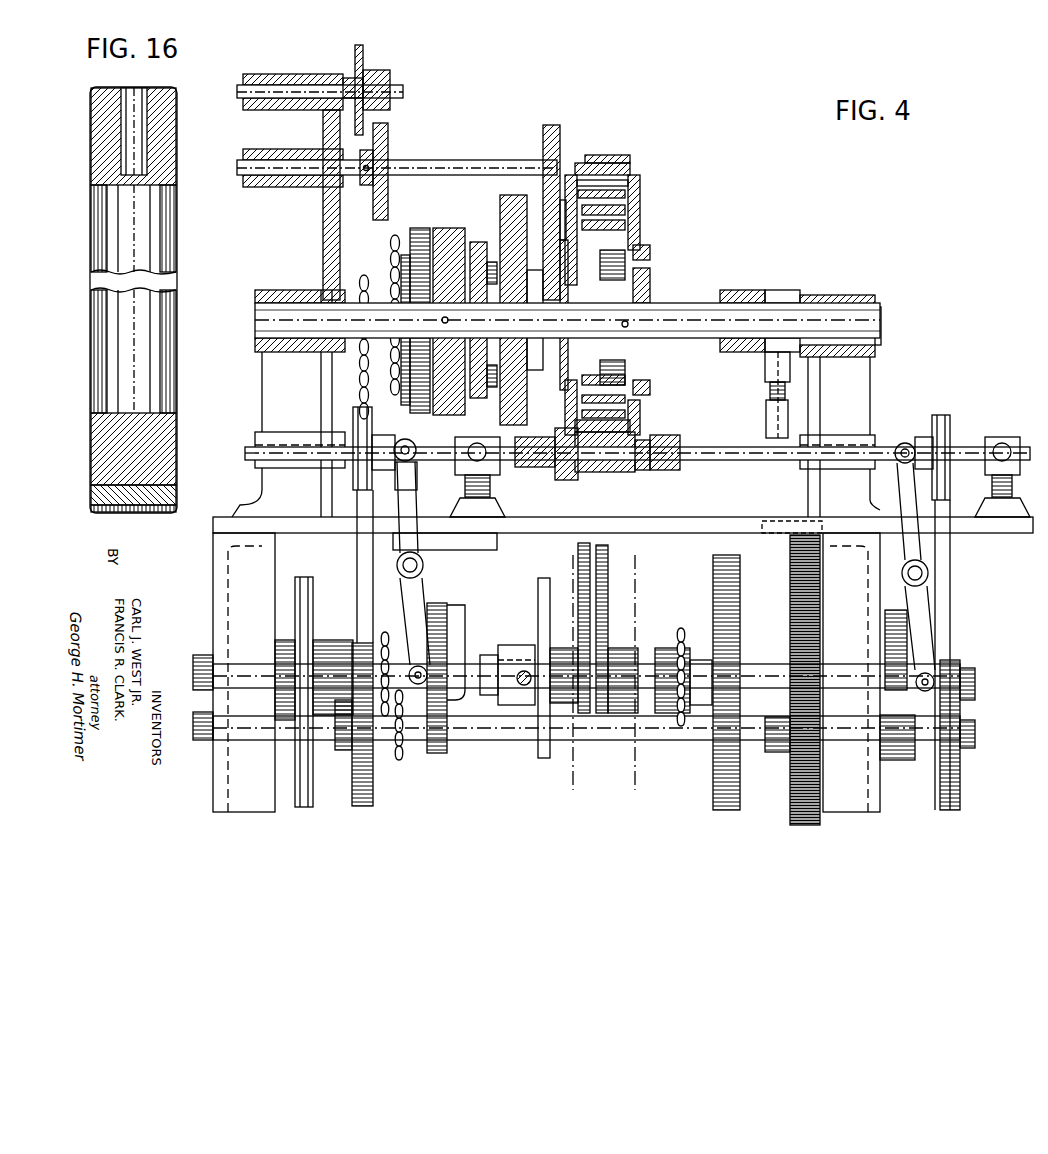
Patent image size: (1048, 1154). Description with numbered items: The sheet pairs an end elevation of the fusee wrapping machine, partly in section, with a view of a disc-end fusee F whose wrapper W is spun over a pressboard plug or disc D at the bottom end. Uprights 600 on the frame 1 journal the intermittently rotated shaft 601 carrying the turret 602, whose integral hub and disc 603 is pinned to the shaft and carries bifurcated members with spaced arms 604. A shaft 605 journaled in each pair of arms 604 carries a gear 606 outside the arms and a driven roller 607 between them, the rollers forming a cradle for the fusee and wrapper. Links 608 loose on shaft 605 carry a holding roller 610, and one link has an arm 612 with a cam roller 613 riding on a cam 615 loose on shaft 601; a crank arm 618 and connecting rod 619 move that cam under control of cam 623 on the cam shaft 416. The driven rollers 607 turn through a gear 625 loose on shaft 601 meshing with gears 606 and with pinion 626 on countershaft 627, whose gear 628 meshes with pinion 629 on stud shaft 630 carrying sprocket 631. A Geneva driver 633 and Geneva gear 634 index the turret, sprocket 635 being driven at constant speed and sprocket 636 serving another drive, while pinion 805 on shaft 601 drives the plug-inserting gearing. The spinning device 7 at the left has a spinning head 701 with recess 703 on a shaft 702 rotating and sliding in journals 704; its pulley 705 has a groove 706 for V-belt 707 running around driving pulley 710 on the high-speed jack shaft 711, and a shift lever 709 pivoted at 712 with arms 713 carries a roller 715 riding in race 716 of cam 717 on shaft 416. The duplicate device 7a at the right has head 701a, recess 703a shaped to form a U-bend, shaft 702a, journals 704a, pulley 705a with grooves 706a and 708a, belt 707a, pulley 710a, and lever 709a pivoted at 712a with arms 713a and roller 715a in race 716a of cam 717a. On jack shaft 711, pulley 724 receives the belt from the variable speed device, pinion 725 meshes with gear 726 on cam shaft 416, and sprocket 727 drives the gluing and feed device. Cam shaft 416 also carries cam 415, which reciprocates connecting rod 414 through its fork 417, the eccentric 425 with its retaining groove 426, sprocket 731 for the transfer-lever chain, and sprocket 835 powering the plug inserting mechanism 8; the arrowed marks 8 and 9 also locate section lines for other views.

In FIG. 16, the filled end portion F is at (98, 158).
In FIG. 16, the cylindrical wall W is at (90, 248).
In FIG. 16, the plug or disc D is at (105, 497).
In FIG. 4, the frame 1 is at (213, 590).
In FIG. 4, the spinning device 7 is at (431, 444).
In FIG. 4, the spinning device 7a is at (971, 441).
In FIG. 4, the plug inserting mechanism 8 is at (556, 562).
In FIG. 4, the section line 9 is at (640, 558).
In FIG. 4, the connecting rod 414 is at (522, 690).
In FIG. 4, the cam 415 is at (540, 592).
In FIG. 4, the cam shaft 416 is at (193, 672).
In FIG. 4, the fork 417 is at (518, 648).
In FIG. 4, the eccentric 425 is at (606, 562).
In FIG. 4, the groove 426 is at (589, 619).
In FIG. 4, the uprights 600 is at (268, 398).
In FIG. 4, the shaft 601 is at (230, 300).
In FIG. 4, the turret 602 is at (616, 308).
In FIG. 4, the hub and disc 603 is at (612, 317).
In FIG. 4, the arms 604 is at (630, 226).
In FIG. 4, the shaft 605 is at (630, 212).
In FIG. 4, the gear 606 is at (562, 220).
In FIG. 4, the driven roller 607 is at (626, 194).
In FIG. 4, the links 608 is at (566, 200).
In FIG. 4, the holding roller 610 is at (610, 160).
In FIG. 4, the arm 612 is at (640, 405).
In FIG. 4, the cam roller 613 is at (651, 254).
In FIG. 4, the cam 615 is at (651, 290).
In FIG. 4, the crank arm 618 is at (768, 303).
In FIG. 4, the connecting rod 619 is at (764, 418).
In FIG. 4, the cam 623 is at (740, 578).
In FIG. 4, the gear 625 is at (530, 396).
In FIG. 4, the pinion 626 is at (545, 140).
In FIG. 4, the counter shaft 627 is at (440, 161).
In FIG. 4, the gear 628 is at (390, 148).
In FIG. 4, the pinion 629 is at (378, 72).
In FIG. 4, the stud shaft 630 is at (405, 93).
In FIG. 4, the sprocket 631 is at (356, 66).
In FIG. 4, the Geneva driver 633 is at (420, 234).
In FIG. 4, the Geneva gear 634 is at (445, 228).
In FIG. 4, the sprocket 635 is at (396, 238).
In FIG. 4, the sprocket 636 is at (362, 285).
In FIG. 4, the spinning head 701 is at (532, 470).
In FIG. 4, the spinning head 701a is at (681, 467).
In FIG. 4, the shaft 702 is at (247, 448).
In FIG. 4, the shaft 702a is at (752, 462).
In FIG. 4, the recess 703 is at (562, 481).
In FIG. 4, the recess 703a is at (640, 472).
In FIG. 4, the journals 704 is at (478, 440).
In FIG. 4, the journals 704a is at (1022, 437).
In FIG. 4, the pulley 705 is at (384, 437).
In FIG. 4, the pulley 705a is at (926, 437).
In FIG. 4, the groove 706 is at (366, 418).
In FIG. 4, the groove 706a is at (945, 415).
In FIG. 4, the V-belt 707 is at (357, 552).
In FIG. 4, the V-belt 707a is at (952, 575).
In FIG. 4, the groove 708a is at (903, 442).
In FIG. 4, the shift lever 709 is at (412, 593).
In FIG. 4, the shift lever 709a is at (915, 530).
In FIG. 4, the driving pulley 710 is at (373, 802).
In FIG. 4, the driving pulley 710a is at (960, 798).
In FIG. 4, the jack shaft 711 is at (193, 727).
In FIG. 4, the pivot 712 is at (425, 568).
In FIG. 4, the pivot 712a is at (900, 575).
In FIG. 4, the arm 713 is at (418, 472).
In FIG. 4, the arm 713a is at (895, 480).
In FIG. 4, the roller 715 is at (430, 684).
In FIG. 4, the roller 715a is at (916, 683).
In FIG. 4, the race 716 is at (440, 605).
In FIG. 4, the race 716a is at (890, 610).
In FIG. 4, the cam 717 is at (466, 660).
In FIG. 4, the cam 717a is at (893, 762).
In FIG. 4, the pulley 724 is at (313, 615).
In FIG. 4, the pinion 725 is at (778, 752).
In FIG. 4, the gear 726 is at (790, 594).
In FIG. 4, the sprocket 727 is at (400, 762).
In FIG. 4, the sprocket 731 is at (385, 635).
In FIG. 4, the pinion 805 is at (478, 252).
In FIG. 4, the sprocket 835 is at (681, 636).